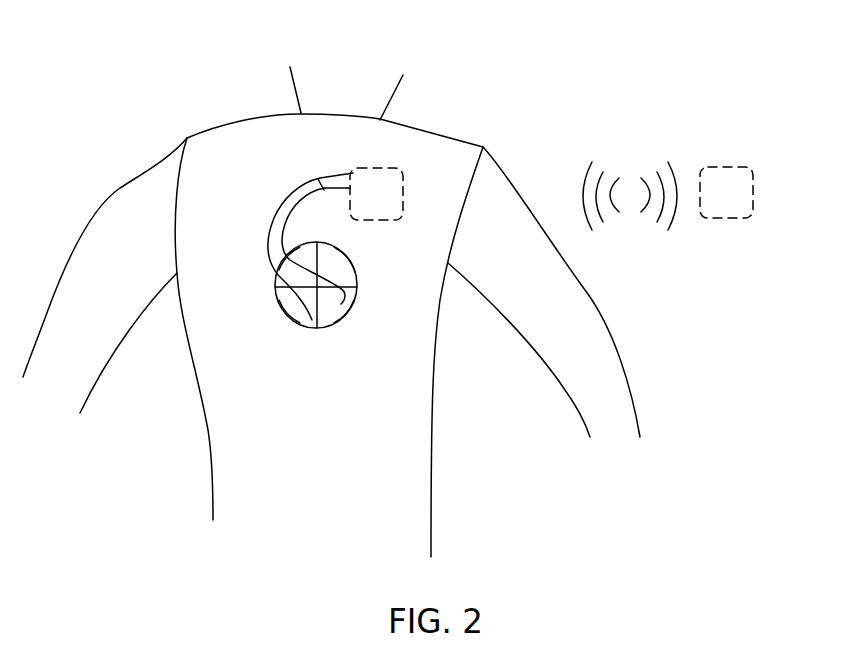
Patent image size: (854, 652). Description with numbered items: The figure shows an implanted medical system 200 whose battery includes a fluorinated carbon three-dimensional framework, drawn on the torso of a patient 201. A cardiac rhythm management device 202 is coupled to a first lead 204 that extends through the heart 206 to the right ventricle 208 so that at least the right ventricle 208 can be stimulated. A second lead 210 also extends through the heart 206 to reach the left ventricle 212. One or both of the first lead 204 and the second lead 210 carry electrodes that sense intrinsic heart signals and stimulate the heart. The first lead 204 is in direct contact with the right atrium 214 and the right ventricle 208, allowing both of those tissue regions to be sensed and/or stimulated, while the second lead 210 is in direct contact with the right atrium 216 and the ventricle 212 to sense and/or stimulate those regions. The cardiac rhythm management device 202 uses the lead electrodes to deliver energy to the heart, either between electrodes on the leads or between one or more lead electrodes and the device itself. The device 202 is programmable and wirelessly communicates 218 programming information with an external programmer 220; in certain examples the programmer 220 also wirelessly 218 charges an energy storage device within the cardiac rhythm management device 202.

The wearable monitoring system 200 is at (758, 48).
The user torso / garment 201 is at (149, 170).
The cardiac rhythm management device 202 is at (389, 182).
The first lead 204 is at (271, 218).
The heart 206 is at (352, 250).
The right ventricle 208 is at (287, 312).
The second lead 210 is at (318, 179).
The left ventricle 212 is at (343, 320).
The right atrium 214 is at (277, 280).
The right atrium 216 is at (358, 282).
The wireless communication 218 is at (611, 174).
The programmer 220 is at (735, 174).